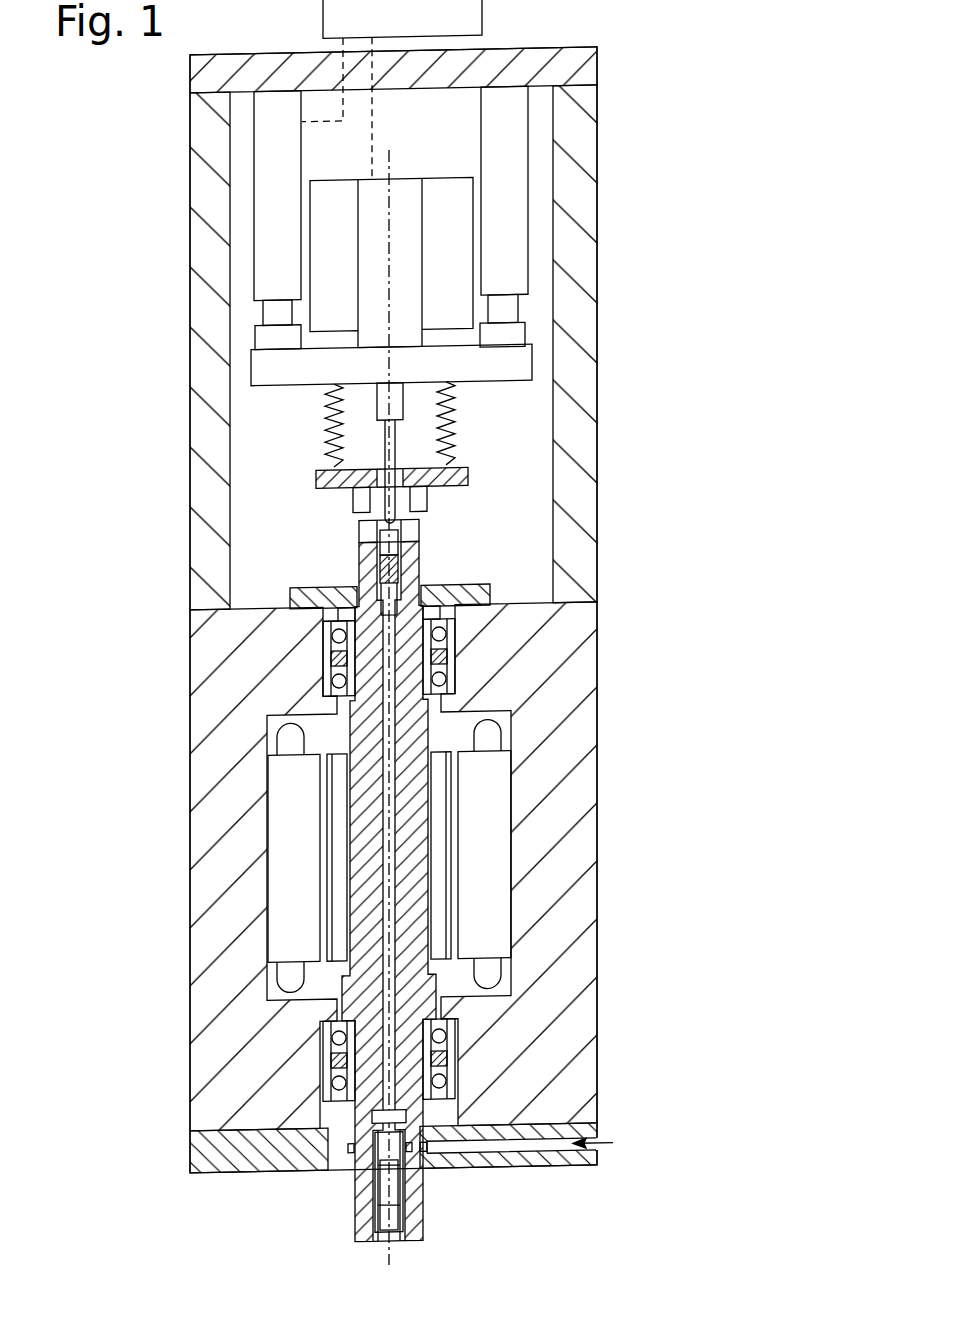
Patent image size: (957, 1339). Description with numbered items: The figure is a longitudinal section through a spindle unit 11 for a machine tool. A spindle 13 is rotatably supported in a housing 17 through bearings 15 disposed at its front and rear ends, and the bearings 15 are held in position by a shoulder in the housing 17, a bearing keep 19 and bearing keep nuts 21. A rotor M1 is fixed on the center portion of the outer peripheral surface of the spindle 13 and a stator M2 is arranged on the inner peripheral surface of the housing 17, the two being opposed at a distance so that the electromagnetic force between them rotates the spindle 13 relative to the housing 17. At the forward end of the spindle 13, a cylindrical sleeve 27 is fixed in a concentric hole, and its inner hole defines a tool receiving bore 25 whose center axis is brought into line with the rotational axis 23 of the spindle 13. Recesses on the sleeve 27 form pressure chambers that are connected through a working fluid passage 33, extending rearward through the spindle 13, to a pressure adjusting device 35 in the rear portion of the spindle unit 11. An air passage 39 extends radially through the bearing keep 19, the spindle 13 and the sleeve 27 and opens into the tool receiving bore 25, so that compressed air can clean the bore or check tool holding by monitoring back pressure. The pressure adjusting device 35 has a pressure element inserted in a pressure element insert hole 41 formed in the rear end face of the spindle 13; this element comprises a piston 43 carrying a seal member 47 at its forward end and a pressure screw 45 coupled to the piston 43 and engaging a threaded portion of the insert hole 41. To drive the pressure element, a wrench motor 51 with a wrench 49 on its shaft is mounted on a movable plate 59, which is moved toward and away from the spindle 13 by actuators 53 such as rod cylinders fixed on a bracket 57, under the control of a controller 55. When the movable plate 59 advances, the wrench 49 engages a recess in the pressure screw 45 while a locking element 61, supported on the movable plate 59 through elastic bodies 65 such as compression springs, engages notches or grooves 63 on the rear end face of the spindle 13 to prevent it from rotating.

The spindle unit 11 is at (670, 158).
The spindle 13 is at (420, 568).
The bearings 15 is at (457, 633).
The housing 17 is at (585, 794).
The bearing keep 19 is at (492, 599).
The bearing keep nuts 21 is at (352, 599).
The rotational axis 23 is at (387, 1258).
The tool receiving bore 25 is at (393, 1233).
The cylindrical sleeve 27 is at (413, 1227).
The working fluid passage 33 is at (393, 930).
The pressure adjusting device 35 is at (524, 415).
The air passage 39 is at (593, 1129).
The pressure element insert hole 41 is at (362, 525).
The piston 43 is at (407, 600).
The pressure screw 45 is at (413, 577).
The seal member 47 is at (323, 634).
The wrench 49 is at (384, 450).
The wrench motor 51 is at (400, 178).
The actuator 53 is at (528, 253).
The controller 55 is at (482, 20).
The bracket 57 is at (597, 116).
The movable plate 59 is at (513, 372).
The locking element 61 is at (468, 480).
The notches or grooves 63 is at (427, 516).
The elastic bodies 65 is at (455, 451).
The rotor M1 is at (445, 871).
The stator M2 is at (503, 840).